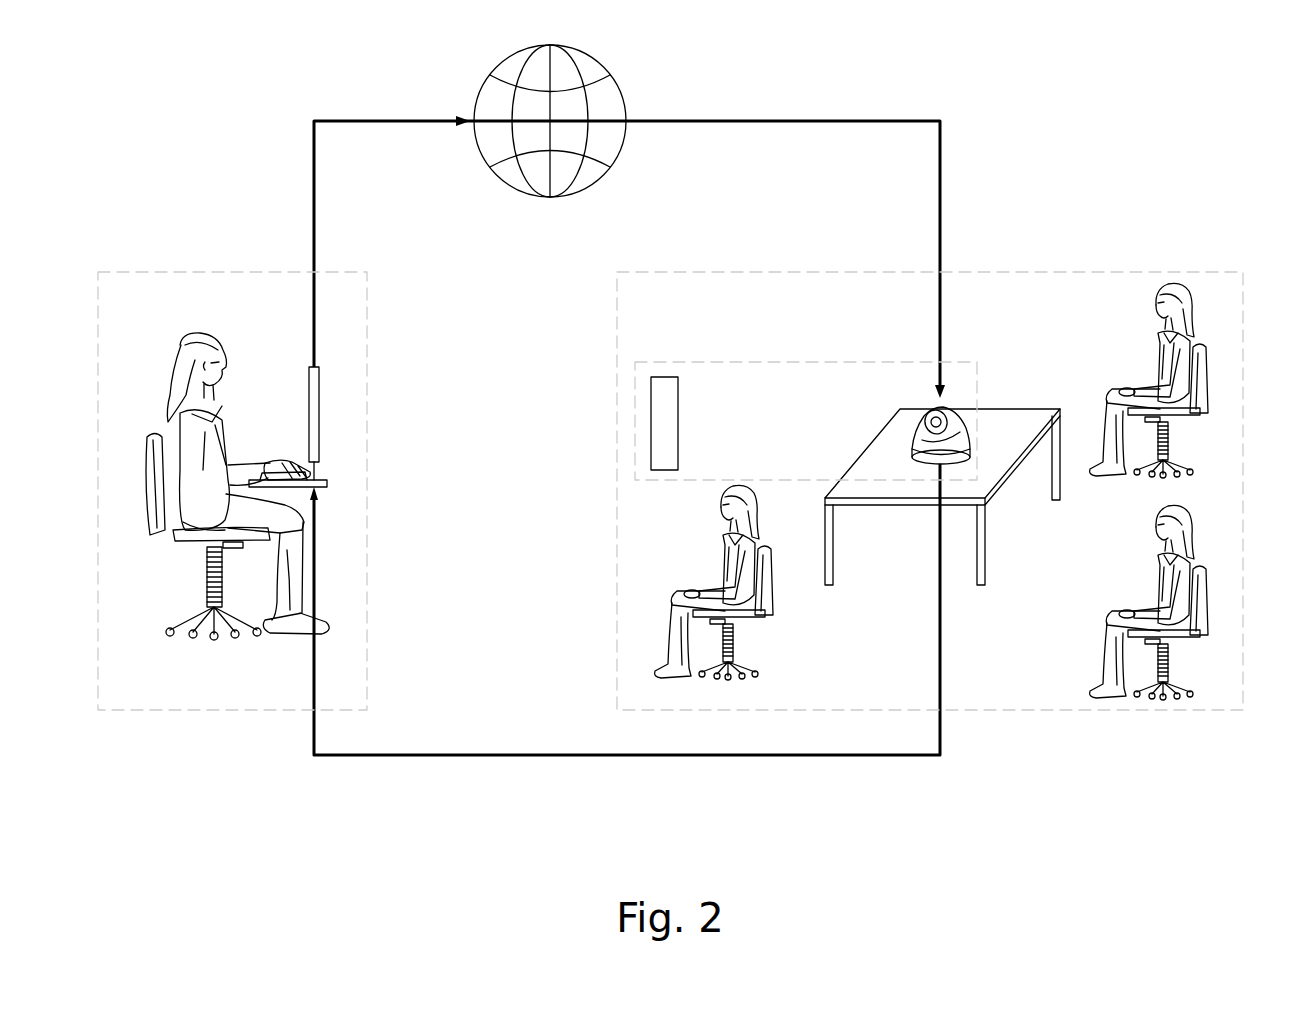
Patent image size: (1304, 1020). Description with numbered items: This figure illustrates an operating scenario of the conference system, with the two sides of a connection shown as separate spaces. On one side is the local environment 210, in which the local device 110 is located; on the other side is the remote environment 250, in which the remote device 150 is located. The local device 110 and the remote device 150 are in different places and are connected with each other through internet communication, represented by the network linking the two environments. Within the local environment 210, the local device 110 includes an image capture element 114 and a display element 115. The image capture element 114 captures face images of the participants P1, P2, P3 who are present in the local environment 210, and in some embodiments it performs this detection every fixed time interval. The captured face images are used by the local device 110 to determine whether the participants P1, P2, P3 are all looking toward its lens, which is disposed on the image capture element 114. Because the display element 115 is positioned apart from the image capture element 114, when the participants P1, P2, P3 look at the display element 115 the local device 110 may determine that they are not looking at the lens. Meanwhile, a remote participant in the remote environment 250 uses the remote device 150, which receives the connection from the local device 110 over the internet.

The remote environment 250 is at (212, 272).
The local environment 210 is at (1071, 272).
The remote device 150 is at (320, 411).
The local device 110 is at (637, 406).
The display element 115 is at (651, 443).
The image capture element 114 is at (963, 440).
The participant P1 is at (678, 672).
The participant P2 is at (1192, 607).
The participant P3 is at (1192, 378).